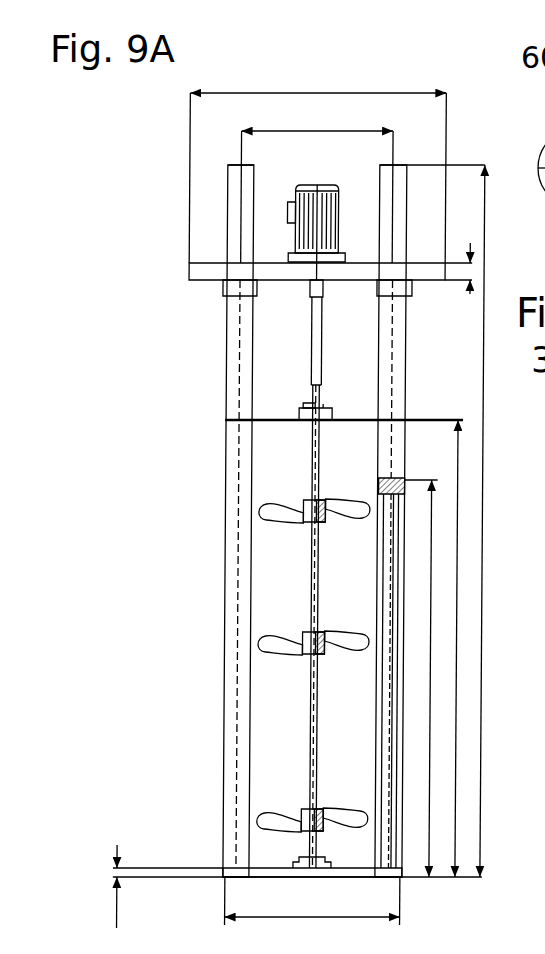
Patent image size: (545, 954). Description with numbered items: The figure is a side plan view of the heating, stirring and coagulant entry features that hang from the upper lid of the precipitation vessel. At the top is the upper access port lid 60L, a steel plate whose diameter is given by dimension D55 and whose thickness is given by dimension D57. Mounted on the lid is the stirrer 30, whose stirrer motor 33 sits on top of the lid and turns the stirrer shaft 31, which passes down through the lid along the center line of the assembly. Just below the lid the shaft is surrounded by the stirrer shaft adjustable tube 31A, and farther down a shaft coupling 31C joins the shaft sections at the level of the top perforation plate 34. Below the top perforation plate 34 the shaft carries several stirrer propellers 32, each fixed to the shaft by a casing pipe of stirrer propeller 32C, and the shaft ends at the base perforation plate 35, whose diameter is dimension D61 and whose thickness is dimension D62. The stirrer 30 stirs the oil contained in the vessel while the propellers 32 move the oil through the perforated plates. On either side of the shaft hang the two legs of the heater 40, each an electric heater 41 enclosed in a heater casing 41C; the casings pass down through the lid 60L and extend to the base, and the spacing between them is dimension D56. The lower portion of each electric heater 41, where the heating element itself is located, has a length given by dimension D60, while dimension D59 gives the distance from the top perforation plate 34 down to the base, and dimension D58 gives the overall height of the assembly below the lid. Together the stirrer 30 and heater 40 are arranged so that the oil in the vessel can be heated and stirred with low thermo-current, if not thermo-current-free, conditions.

The stirrer 30 is at (364, 79).
The stirrer shaft 31 is at (316, 473).
The stirrer shaft adjustable tube 31A is at (312, 332).
The shaft coupling 31C is at (308, 410).
The stirrer propeller 32 is at (280, 527).
The casing pipe of stirrer propeller 32C is at (306, 820).
The stirrer motor 33 is at (314, 222).
The top perforation plate 34 is at (229, 422).
The base perforation plate 35 is at (269, 868).
The heater 40 is at (254, 365).
The electric heater 41 is at (385, 743).
The heater casing 41C is at (242, 194).
The upper access port lid 60L is at (190, 270).
The dimension D55 is at (322, 93).
The dimension D56 is at (357, 131).
The dimension D57 is at (472, 294).
The dimension D58 is at (488, 398).
The dimension D59 is at (461, 566).
The dimension D60 is at (435, 612).
The dimension D61 is at (376, 916).
The dimension D62 is at (124, 912).